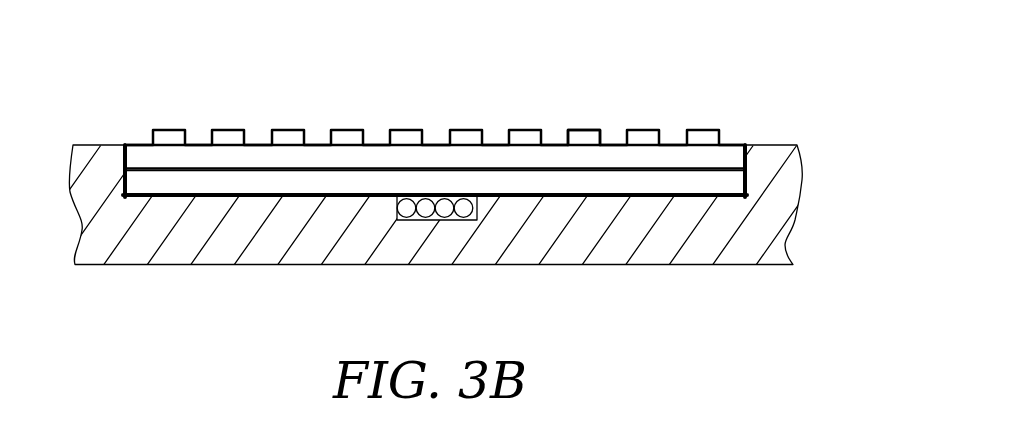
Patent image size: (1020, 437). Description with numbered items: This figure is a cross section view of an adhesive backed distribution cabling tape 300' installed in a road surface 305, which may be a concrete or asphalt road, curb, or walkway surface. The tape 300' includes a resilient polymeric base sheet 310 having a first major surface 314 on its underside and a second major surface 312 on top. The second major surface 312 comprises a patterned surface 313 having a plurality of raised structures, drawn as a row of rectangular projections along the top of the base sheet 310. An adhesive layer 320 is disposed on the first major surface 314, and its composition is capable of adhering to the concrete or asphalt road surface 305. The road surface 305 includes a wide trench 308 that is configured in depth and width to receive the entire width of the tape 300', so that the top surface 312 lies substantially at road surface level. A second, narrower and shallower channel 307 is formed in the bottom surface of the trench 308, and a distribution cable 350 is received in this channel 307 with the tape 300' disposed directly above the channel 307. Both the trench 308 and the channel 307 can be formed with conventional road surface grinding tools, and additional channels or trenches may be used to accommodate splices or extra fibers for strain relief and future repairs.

The distribution cabling tape 300' is at (441, 179).
The road surface 305 is at (746, 145).
The channel 307 is at (477, 220).
The trench 308 is at (747, 168).
The resilient polymeric base sheet 310 is at (729, 156).
The second major surface 312 is at (668, 145).
The patterned surface 313 is at (582, 130).
The first major surface 314 is at (715, 170).
The adhesive layer 320 is at (637, 180).
The distribution cable 350 is at (458, 204).